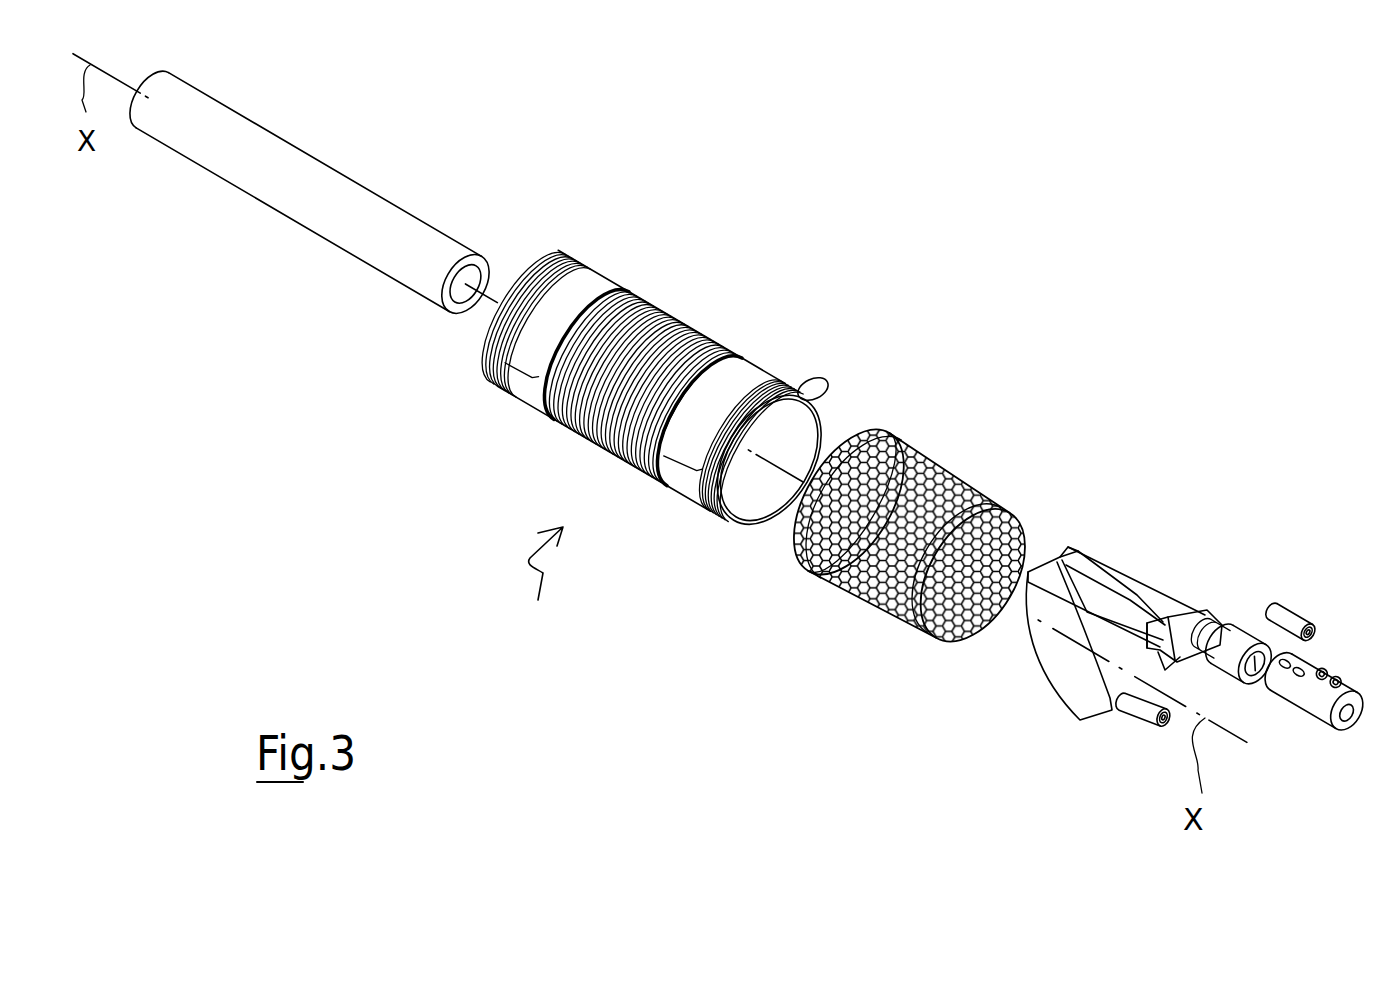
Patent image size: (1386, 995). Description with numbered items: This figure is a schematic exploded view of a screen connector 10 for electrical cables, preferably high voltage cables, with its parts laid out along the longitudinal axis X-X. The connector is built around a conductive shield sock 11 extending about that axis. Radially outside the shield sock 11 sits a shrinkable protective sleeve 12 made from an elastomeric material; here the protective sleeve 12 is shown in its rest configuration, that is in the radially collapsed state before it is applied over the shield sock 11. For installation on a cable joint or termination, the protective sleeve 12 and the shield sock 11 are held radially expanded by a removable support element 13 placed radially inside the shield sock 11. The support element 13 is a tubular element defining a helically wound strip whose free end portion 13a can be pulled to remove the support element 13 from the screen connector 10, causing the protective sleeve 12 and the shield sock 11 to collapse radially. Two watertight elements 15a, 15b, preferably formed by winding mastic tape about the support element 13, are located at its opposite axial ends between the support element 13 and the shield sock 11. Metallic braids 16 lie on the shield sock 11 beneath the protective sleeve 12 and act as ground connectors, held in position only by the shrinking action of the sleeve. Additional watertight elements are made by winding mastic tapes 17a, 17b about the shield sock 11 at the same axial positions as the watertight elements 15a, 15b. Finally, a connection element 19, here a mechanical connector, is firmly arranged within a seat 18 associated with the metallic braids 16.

The screen connector 10 is at (542, 583).
The conductive shield sock 11 is at (920, 477).
The shrinkable protective sleeve 12 is at (388, 222).
The support element 13 is at (664, 326).
The free end portion 13a is at (830, 383).
The watertight element 15a is at (583, 283).
The watertight element 15b is at (750, 375).
The metallic braid 16 is at (1135, 605).
The mastic tape 17a is at (1138, 705).
The mastic tape 17b is at (1292, 612).
The seat 18 is at (1233, 662).
The connection element 19 is at (1312, 697).